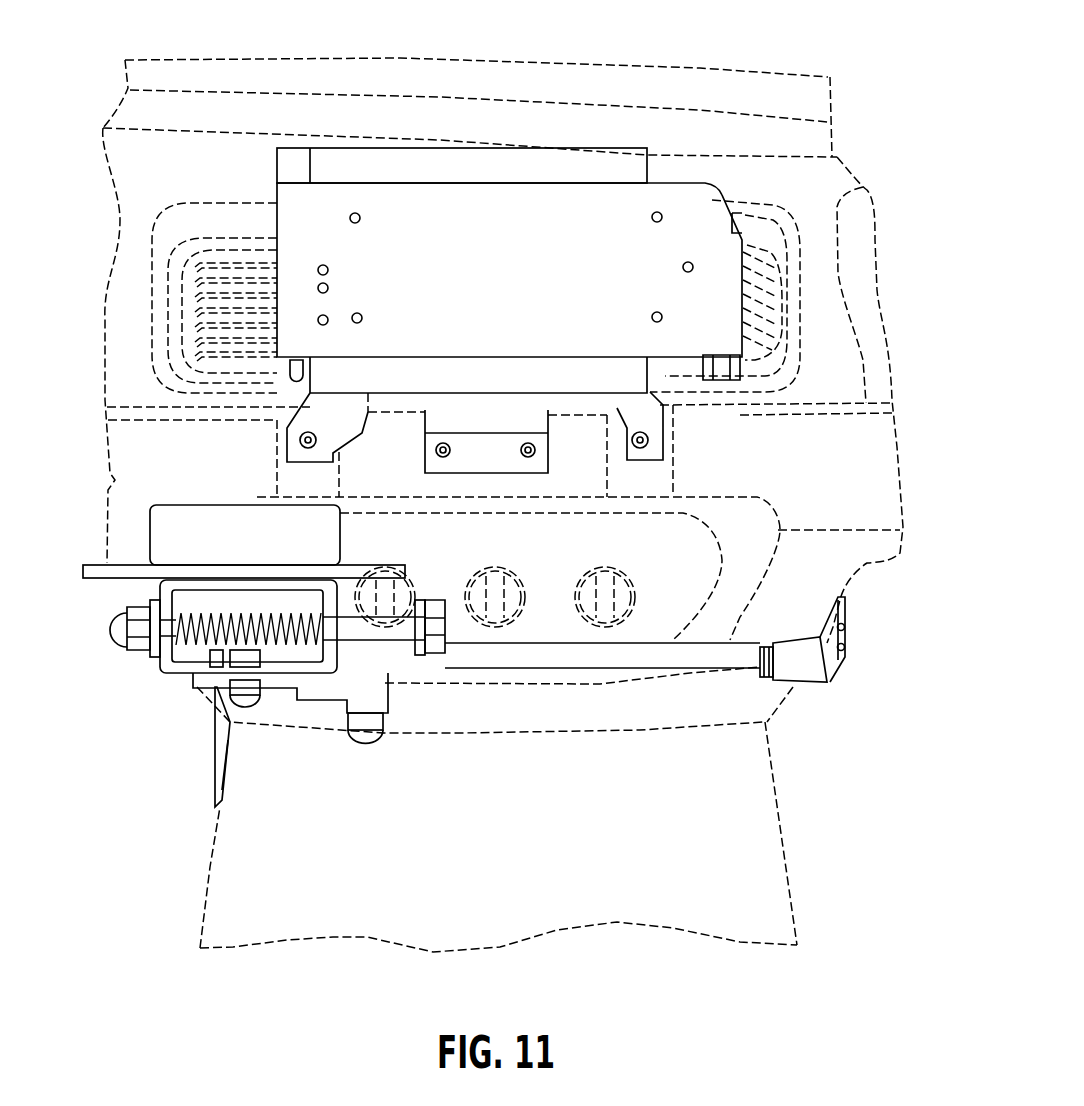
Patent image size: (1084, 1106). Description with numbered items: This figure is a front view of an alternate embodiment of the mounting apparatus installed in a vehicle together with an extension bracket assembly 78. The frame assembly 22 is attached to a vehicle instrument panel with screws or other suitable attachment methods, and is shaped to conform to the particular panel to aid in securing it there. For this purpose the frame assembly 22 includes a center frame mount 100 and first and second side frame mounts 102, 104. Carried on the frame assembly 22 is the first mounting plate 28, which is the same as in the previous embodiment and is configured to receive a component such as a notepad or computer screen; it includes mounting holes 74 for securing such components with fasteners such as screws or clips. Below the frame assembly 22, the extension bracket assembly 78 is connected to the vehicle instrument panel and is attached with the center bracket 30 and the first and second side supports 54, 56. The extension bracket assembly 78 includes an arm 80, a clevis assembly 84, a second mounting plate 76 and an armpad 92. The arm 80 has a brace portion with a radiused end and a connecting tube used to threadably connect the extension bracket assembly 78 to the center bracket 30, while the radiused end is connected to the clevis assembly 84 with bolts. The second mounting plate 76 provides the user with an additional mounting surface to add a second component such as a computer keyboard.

The frame assembly 22 is at (467, 149).
The first mounting plate 28 is at (290, 220).
The mounting hole 74 is at (685, 267).
The first side frame mount 102 is at (293, 448).
The center frame mount 100 is at (427, 467).
The second side frame mount 104 is at (660, 440).
The second mounting plate 76 is at (95, 565).
The armpad 92 is at (327, 535).
The clevis assembly 84 is at (158, 663).
The arm 80 is at (318, 700).
The second side support 56 is at (213, 733).
The extension bracket assembly 78 is at (260, 752).
The center bracket 30 is at (607, 663).
The first side support 54 is at (813, 673).